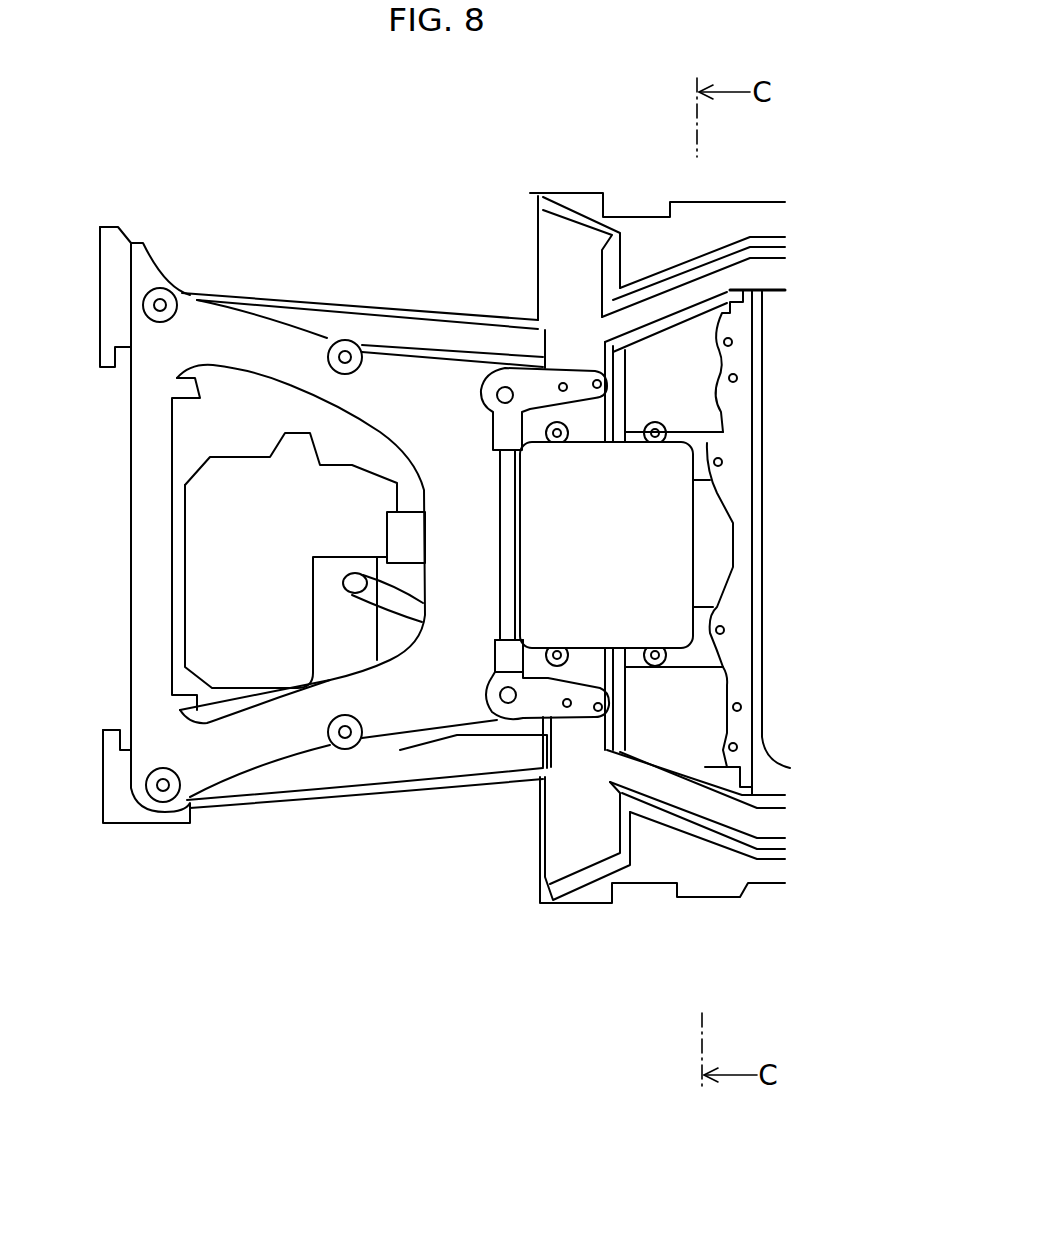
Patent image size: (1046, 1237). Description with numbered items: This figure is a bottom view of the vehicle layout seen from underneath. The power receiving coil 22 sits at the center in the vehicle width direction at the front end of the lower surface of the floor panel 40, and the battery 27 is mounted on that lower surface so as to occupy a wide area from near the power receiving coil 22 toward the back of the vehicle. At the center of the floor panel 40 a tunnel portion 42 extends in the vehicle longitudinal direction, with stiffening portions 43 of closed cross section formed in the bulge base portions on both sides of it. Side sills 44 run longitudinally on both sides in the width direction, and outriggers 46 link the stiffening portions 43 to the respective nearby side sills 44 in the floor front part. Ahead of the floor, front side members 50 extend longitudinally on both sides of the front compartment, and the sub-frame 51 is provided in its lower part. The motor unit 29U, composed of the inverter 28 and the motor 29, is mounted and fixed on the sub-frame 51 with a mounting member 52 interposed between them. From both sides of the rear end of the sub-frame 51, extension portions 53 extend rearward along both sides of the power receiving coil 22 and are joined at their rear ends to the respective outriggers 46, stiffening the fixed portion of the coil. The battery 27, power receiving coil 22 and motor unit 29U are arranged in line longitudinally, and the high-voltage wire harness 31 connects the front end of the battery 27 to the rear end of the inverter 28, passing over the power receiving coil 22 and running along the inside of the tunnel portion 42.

The power receiving coil 22 is at (699, 450).
The battery 27 is at (720, 708).
The inverter 28 is at (197, 683).
The motor 29 is at (187, 583).
The motor unit 29U is at (98, 603).
The wire harness 31 is at (398, 608).
The floor panel 40 is at (713, 377).
The tunnel portion 42 is at (708, 555).
The stiffening portions 43 is at (694, 425).
The side sills 44 is at (712, 256).
The outriggers 46 is at (536, 250).
The front side members 50 is at (326, 302).
The sub-frame 51 is at (130, 583).
The mounting member 52 is at (410, 512).
The extension portions 53 is at (563, 375).